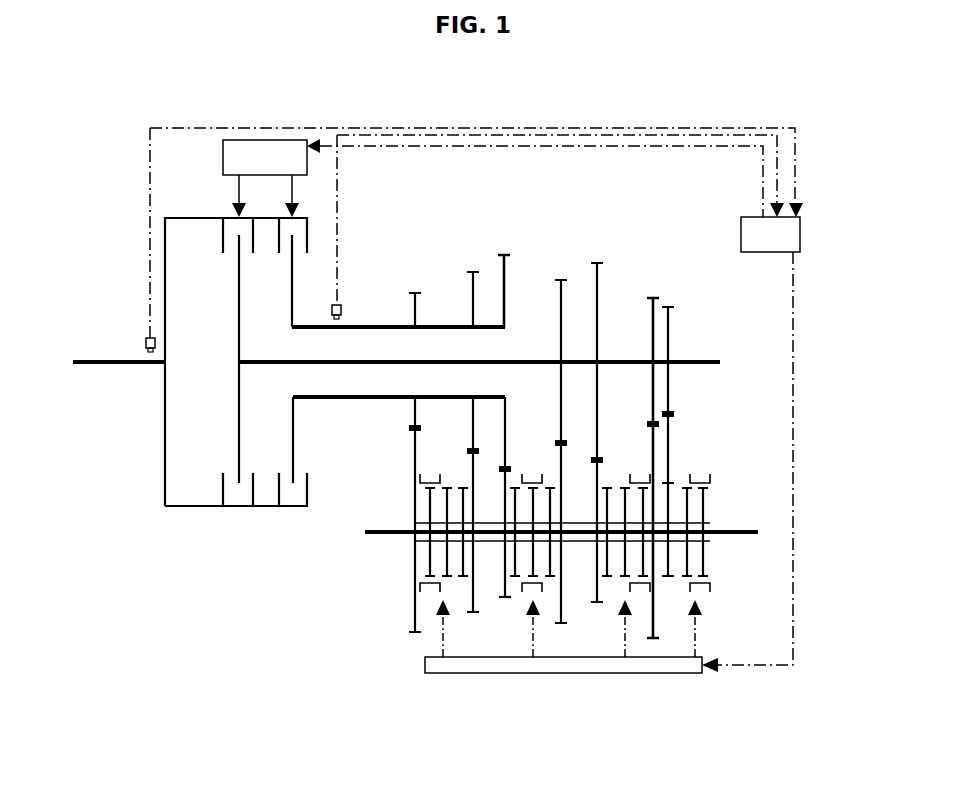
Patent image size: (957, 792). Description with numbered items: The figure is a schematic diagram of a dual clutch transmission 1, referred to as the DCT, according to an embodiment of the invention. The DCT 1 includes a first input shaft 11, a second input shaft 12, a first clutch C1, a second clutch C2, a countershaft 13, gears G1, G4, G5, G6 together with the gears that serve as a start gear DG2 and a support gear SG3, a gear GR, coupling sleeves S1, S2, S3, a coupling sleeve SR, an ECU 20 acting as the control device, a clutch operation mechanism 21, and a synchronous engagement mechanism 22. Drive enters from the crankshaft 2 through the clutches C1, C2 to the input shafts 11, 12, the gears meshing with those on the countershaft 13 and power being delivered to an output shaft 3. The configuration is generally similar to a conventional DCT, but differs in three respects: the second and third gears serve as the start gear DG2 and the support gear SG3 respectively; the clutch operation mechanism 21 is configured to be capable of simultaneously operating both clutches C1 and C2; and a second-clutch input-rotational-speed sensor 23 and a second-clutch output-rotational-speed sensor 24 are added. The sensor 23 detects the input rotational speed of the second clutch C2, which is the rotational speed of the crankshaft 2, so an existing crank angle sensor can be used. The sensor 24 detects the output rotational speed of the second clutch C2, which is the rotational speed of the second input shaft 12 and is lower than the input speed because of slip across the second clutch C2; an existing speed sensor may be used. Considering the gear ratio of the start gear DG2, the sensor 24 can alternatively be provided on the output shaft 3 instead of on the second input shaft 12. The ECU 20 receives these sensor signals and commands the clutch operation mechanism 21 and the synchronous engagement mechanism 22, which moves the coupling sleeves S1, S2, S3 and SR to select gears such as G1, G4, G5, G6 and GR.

The dual clutch transmission 1 is at (813, 268).
The crankshaft 2 is at (74, 366).
The output shaft 3 is at (757, 530).
The first input shaft 11 is at (690, 361).
The second input shaft 12 is at (372, 326).
The countershaft 13 is at (365, 532).
The ECU 20 is at (801, 217).
The clutch operation mechanism 21 is at (245, 157).
The synchronous engagement mechanism 22 is at (430, 660).
The second-clutch input-rotational-speed sensor 23 is at (146, 344).
The second-clutch output-rotational-speed sensor 24 is at (332, 313).
The first clutch C1 is at (235, 289).
The second clutch C2 is at (290, 280).
The start gear DG2 is at (412, 290).
The gear G4 is at (472, 268).
The gear G6 is at (505, 252).
The support gear SG3 is at (560, 278).
The gear G5 is at (598, 261).
The gear G1 is at (652, 294).
The gear GR is at (668, 303).
The coupling sleeve S1 is at (642, 563).
The coupling sleeve S2 is at (447, 565).
The coupling sleeve S3 is at (538, 565).
The coupling sleeve SR is at (700, 577).